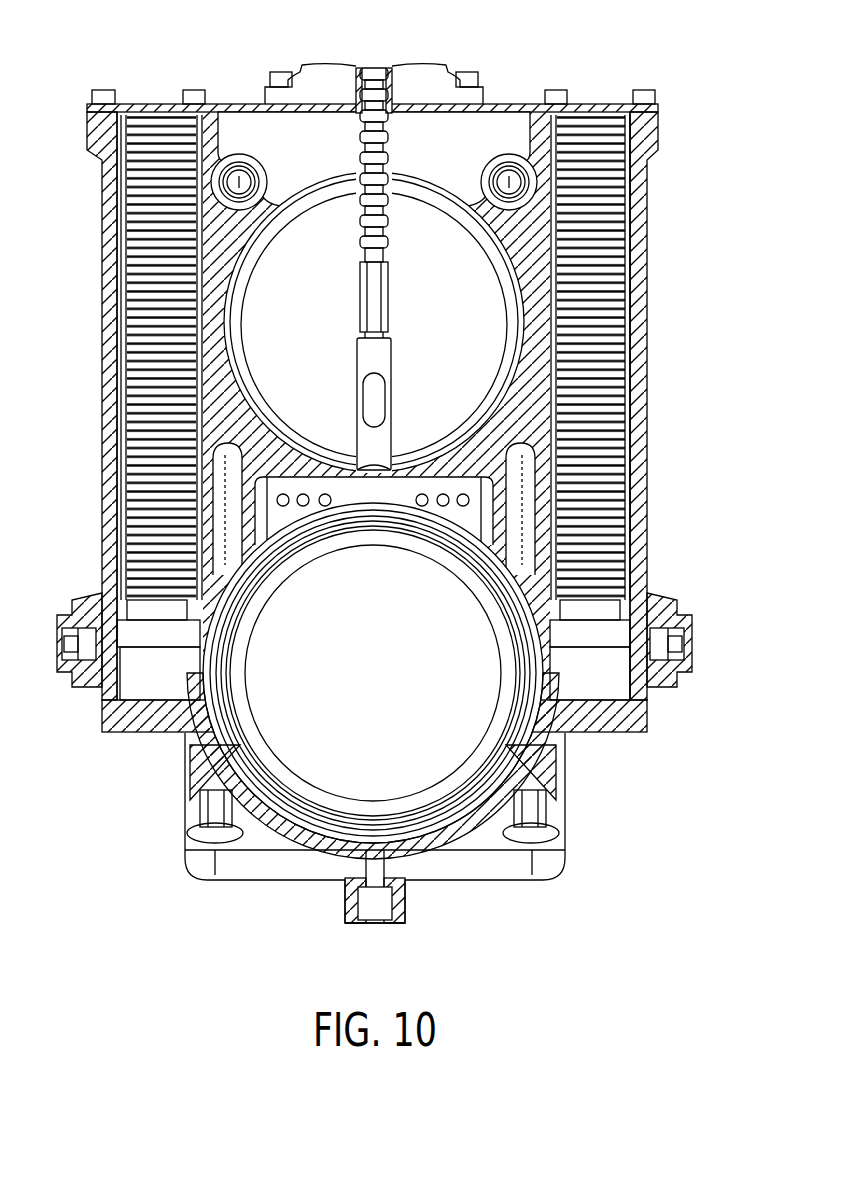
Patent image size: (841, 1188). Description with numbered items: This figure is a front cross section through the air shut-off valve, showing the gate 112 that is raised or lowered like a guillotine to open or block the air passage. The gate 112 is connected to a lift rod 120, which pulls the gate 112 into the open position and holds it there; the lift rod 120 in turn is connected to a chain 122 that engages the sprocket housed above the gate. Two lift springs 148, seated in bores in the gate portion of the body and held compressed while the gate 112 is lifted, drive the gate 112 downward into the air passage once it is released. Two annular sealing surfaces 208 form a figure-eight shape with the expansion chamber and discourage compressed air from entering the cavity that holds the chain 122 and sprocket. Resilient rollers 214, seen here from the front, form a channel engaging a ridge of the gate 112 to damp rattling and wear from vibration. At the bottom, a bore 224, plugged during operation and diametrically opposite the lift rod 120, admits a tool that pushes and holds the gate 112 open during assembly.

The gate 112 is at (457, 628).
The lift rod 120 is at (385, 395).
The chain 122 is at (392, 100).
The lift springs 148 is at (603, 400).
The annular sealing surfaces 208 is at (520, 225).
The resilient rollers 214 is at (237, 178).
The bore 224 is at (373, 900).